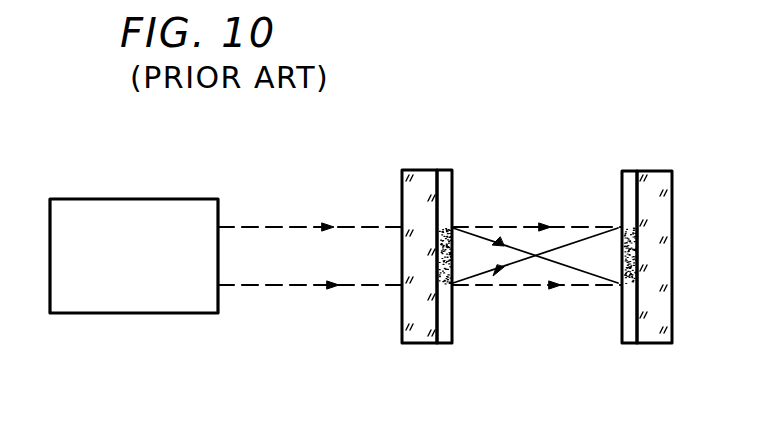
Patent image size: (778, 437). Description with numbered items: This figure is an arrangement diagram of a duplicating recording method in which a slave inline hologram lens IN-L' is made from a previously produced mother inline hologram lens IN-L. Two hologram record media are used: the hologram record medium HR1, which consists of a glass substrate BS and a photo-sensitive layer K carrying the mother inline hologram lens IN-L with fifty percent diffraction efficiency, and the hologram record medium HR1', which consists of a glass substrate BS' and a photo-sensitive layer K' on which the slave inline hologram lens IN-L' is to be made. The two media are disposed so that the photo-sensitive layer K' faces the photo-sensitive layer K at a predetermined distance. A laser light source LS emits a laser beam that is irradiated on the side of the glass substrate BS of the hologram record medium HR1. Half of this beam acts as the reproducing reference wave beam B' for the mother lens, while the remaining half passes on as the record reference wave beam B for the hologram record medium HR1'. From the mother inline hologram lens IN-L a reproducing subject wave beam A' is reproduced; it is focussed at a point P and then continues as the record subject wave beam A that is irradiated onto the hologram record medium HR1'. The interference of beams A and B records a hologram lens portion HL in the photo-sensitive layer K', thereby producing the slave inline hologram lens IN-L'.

The laser light source LS is at (167, 313).
The reproducing reference wave beam B' is at (310, 223).
The hologram record medium HR1 is at (403, 238).
The glass substrate BS is at (409, 231).
The photo-sensitive layer K is at (455, 231).
The inline hologram lens IN-L is at (381, 375).
The hologram record medium HR1' is at (658, 239).
The photo-sensitive layer K' is at (617, 231).
The glass substrate BS' is at (665, 231).
The slave inline hologram lens IN-L' is at (686, 375).
The record reference wave beam B is at (537, 223).
The record subject wave beam A is at (535, 220).
The reproducing subject wave beam A' is at (535, 286).
The focal point P is at (535, 256).
The hologram lens portion HL is at (452, 265).